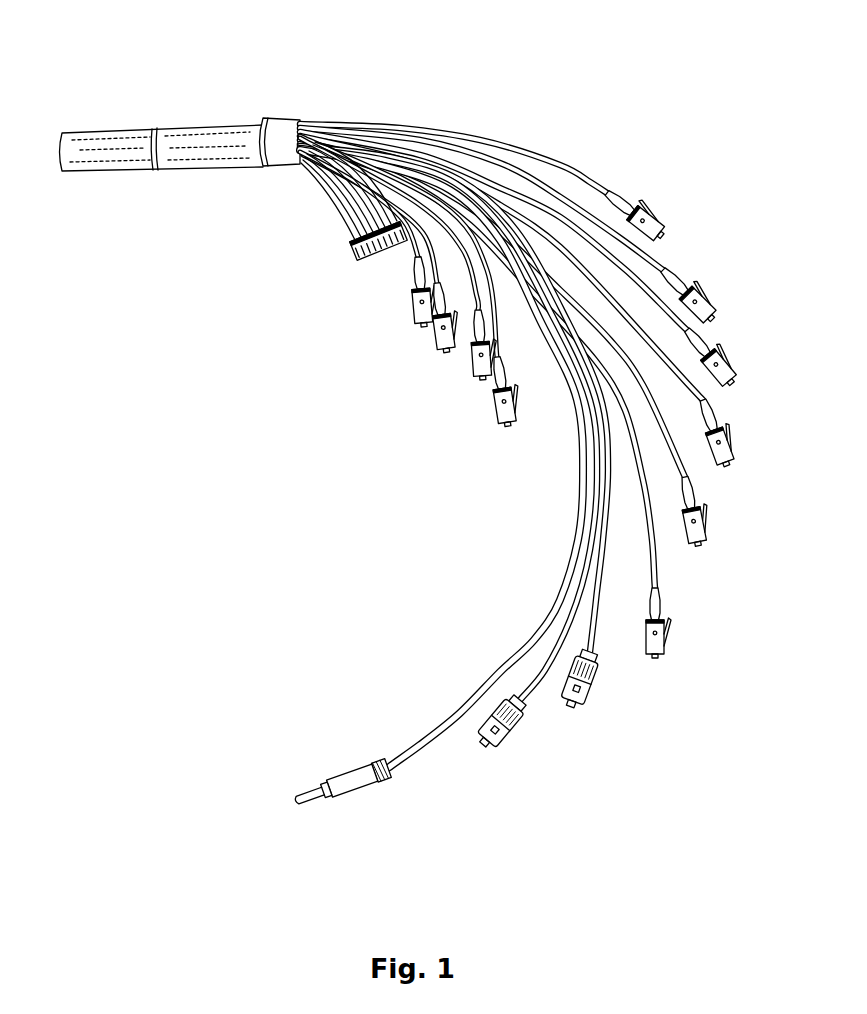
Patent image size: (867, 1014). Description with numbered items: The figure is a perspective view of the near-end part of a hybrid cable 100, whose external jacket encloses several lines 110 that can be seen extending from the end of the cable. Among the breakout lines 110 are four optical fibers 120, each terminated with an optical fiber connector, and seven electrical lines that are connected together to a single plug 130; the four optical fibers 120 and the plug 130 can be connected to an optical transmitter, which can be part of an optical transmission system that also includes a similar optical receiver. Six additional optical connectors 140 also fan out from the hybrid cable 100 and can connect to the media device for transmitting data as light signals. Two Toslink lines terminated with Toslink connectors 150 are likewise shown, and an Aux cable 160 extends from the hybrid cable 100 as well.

The hybrid cable 100 is at (152, 128).
The lines 110 is at (403, 127).
The optical fibers 120 is at (432, 315).
The plug 130 is at (367, 262).
The additional optical connectors 140 is at (712, 303).
The Toslink connectors 150 is at (598, 667).
The Aux cable 160 is at (330, 777).